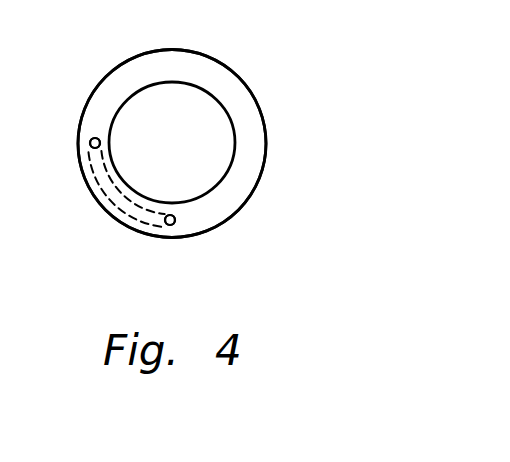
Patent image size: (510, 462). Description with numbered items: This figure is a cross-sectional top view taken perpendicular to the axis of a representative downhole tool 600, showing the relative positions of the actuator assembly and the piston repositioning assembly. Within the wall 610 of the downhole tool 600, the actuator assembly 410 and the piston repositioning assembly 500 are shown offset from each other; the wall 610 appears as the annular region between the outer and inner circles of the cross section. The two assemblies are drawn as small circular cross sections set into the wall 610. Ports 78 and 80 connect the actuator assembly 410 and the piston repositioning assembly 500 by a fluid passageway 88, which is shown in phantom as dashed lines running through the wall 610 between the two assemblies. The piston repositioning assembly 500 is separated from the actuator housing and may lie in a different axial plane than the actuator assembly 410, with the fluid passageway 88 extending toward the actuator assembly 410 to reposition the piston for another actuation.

The downhole tool 600 is at (265, 69).
The wall 610 is at (170, 63).
The actuator assembly 410 is at (93, 139).
The port 78 is at (92, 147).
The fluid passageway 88 is at (102, 196).
The port 80 is at (172, 226).
The piston repositioning assembly 500 is at (176, 220).